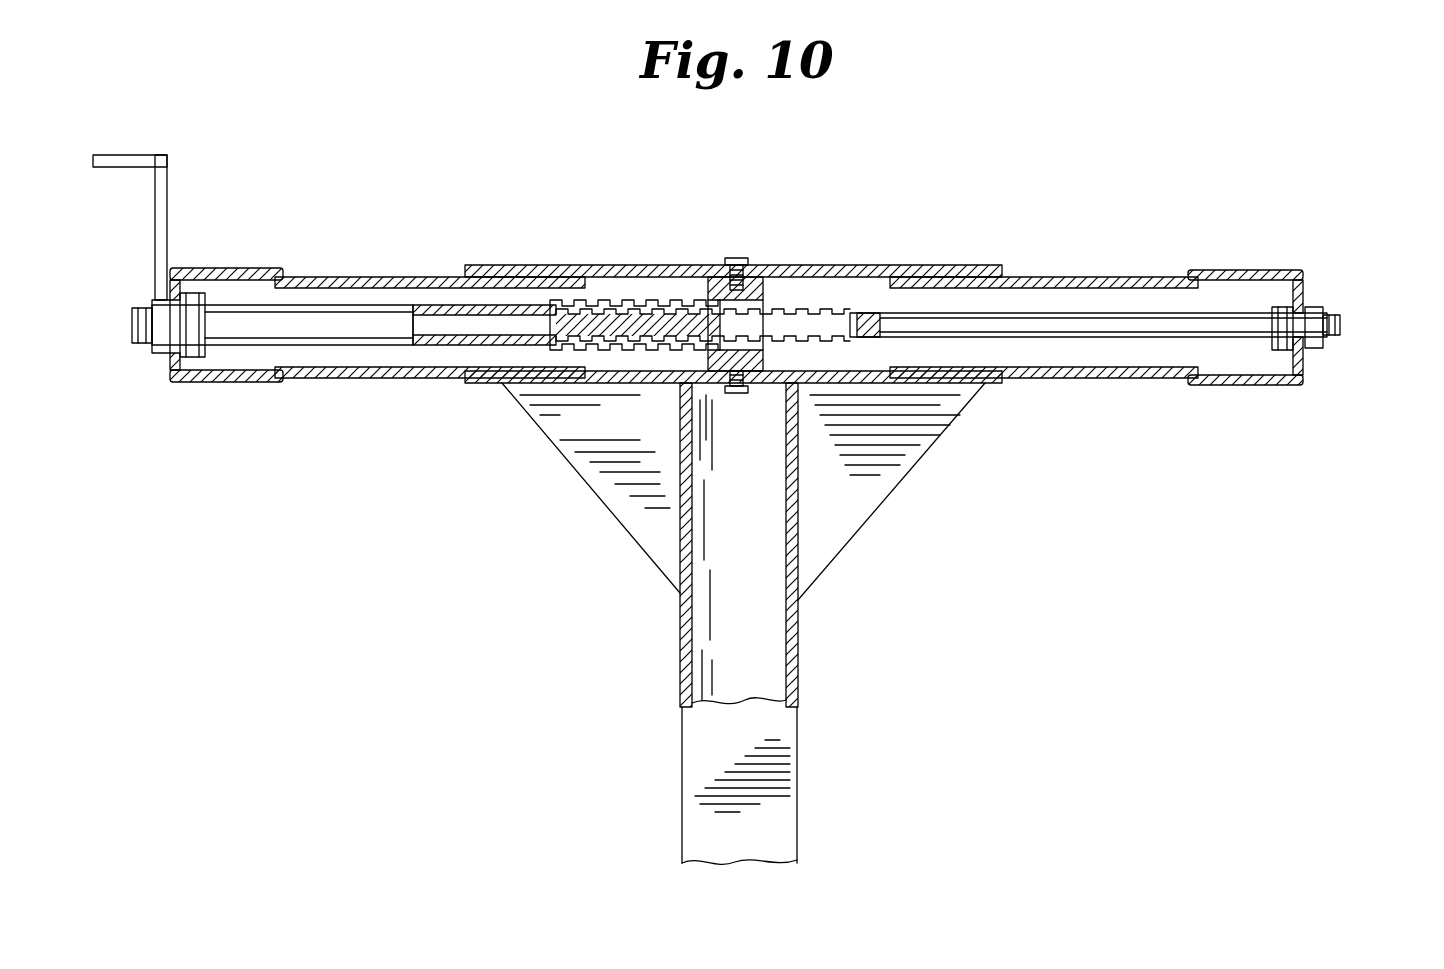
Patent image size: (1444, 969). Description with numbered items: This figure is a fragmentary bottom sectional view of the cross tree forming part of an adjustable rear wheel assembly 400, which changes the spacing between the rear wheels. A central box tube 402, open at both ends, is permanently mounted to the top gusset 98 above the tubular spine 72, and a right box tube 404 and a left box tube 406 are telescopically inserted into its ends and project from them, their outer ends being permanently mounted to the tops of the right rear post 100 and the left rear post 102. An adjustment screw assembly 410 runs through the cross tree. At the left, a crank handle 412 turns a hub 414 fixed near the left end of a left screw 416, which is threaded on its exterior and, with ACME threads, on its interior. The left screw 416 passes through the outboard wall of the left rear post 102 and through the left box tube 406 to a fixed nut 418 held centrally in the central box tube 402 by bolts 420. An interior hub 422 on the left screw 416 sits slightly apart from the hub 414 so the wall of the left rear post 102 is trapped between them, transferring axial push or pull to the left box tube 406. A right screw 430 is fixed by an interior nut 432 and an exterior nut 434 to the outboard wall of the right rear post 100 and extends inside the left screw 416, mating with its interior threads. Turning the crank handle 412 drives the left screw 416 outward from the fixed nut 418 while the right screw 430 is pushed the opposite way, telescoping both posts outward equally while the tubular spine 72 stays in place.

The adjustable rear wheel assembly 400 is at (1003, 238).
The central box tube 402 is at (820, 265).
The right box tube 404 is at (1085, 277).
The left box tube 406 is at (382, 277).
The adjustment screw assembly 410 is at (1340, 318).
The crank handle 412 is at (168, 185).
The hub 414 is at (152, 355).
The left screw 416 is at (133, 345).
The fixed nut 418 is at (762, 277).
The bolts 420 is at (737, 258).
The interior hub 422 is at (197, 293).
The right screw 430 is at (1230, 313).
The interior nut 432 is at (1285, 352).
The exterior nut 434 is at (1318, 350).
The right rear post 100 is at (1220, 387).
The left rear post 102 is at (250, 384).
The top gusset 98 is at (860, 508).
The tubular spine 72 is at (798, 665).